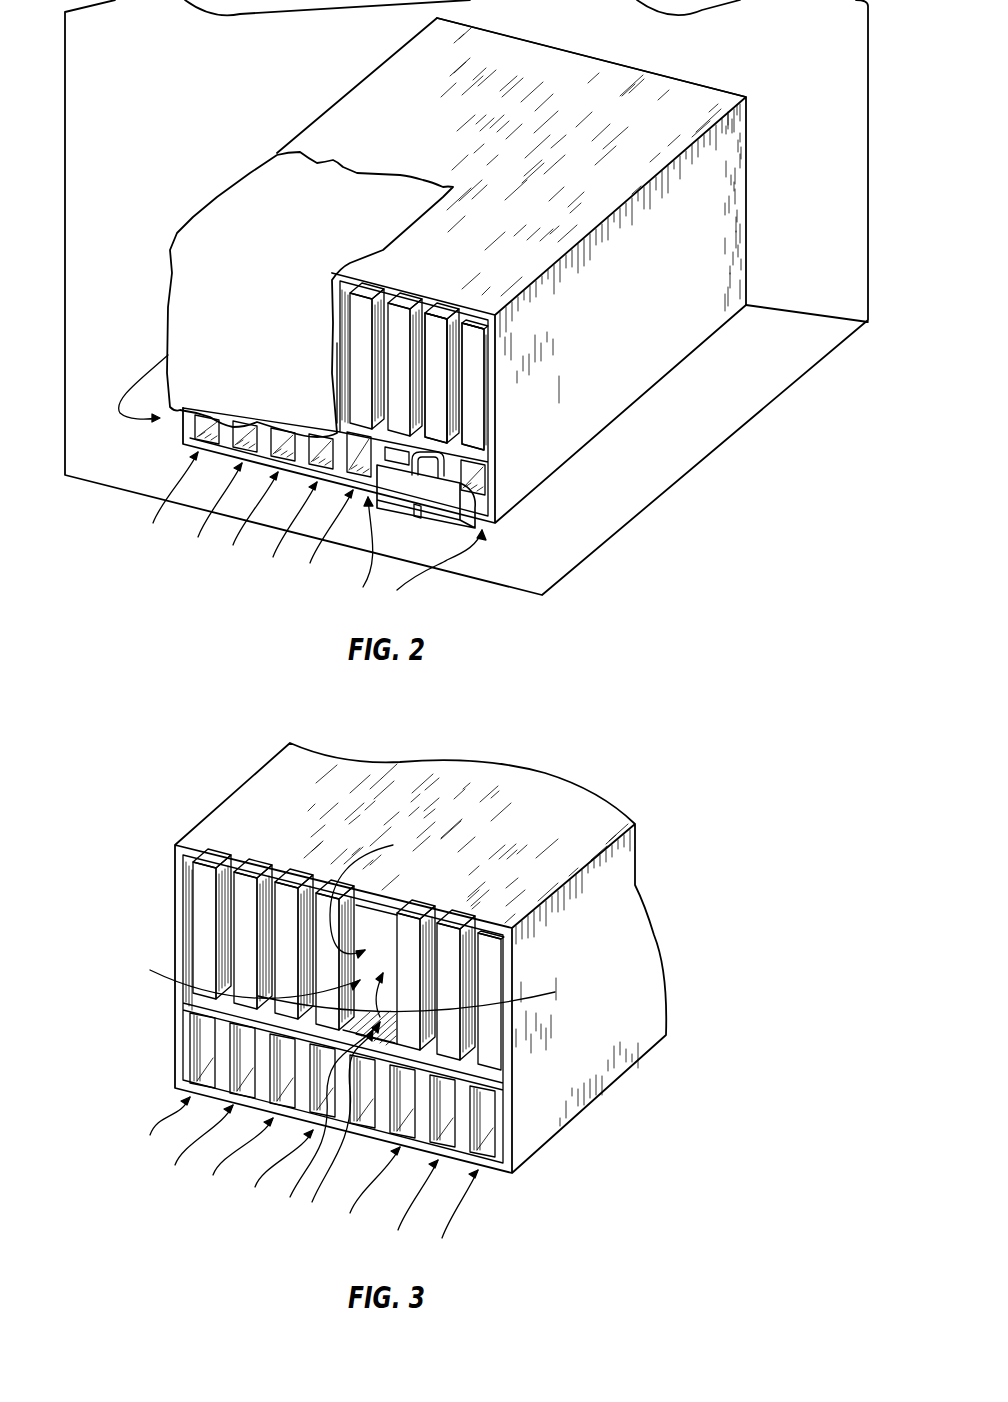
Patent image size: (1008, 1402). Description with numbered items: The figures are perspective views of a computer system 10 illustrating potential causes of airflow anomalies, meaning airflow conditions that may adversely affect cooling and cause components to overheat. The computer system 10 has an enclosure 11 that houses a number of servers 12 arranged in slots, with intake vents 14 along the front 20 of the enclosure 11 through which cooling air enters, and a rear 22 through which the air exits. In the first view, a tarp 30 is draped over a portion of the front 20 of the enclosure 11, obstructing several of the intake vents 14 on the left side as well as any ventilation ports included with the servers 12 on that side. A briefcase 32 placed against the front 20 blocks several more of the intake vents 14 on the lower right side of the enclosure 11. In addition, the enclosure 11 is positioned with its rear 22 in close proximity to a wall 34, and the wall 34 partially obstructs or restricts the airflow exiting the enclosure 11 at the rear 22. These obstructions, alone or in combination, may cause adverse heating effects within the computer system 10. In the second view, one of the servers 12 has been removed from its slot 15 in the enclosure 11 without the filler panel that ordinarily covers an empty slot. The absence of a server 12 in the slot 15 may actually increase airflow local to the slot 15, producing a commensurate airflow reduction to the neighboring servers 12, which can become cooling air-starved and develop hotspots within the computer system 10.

In FIG. 2, the computer system 10 is at (741, 69).
In FIG. 3, the computer system 10 is at (642, 771).
In FIG. 2, the enclosure 11 is at (529, 50).
In FIG. 3, the enclosure 11 is at (458, 770).
In FIG. 2, the servers 12 is at (433, 350).
In FIG. 3, the servers 12 is at (448, 1045).
In FIG. 2, the intake vents 14 is at (477, 470).
In FIG. 3, the slot 15 is at (380, 935).
In FIG. 2, the front 20 is at (380, 290).
In FIG. 2, the rear 22 is at (632, 67).
In FIG. 2, the tarp 30 is at (303, 163).
In FIG. 2, the briefcase 32 is at (447, 483).
In FIG. 2, the wall 34 is at (830, 215).